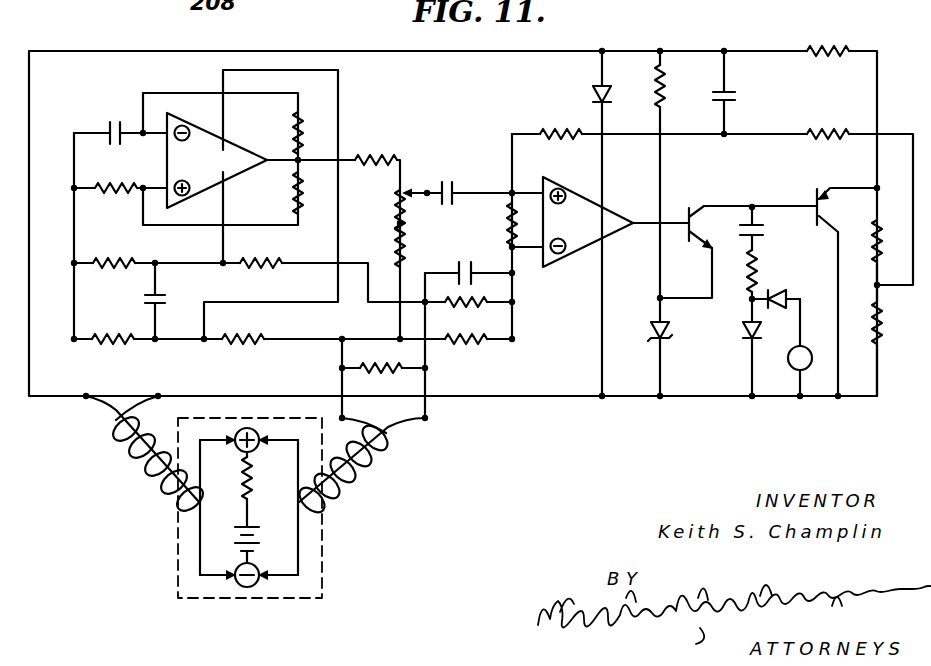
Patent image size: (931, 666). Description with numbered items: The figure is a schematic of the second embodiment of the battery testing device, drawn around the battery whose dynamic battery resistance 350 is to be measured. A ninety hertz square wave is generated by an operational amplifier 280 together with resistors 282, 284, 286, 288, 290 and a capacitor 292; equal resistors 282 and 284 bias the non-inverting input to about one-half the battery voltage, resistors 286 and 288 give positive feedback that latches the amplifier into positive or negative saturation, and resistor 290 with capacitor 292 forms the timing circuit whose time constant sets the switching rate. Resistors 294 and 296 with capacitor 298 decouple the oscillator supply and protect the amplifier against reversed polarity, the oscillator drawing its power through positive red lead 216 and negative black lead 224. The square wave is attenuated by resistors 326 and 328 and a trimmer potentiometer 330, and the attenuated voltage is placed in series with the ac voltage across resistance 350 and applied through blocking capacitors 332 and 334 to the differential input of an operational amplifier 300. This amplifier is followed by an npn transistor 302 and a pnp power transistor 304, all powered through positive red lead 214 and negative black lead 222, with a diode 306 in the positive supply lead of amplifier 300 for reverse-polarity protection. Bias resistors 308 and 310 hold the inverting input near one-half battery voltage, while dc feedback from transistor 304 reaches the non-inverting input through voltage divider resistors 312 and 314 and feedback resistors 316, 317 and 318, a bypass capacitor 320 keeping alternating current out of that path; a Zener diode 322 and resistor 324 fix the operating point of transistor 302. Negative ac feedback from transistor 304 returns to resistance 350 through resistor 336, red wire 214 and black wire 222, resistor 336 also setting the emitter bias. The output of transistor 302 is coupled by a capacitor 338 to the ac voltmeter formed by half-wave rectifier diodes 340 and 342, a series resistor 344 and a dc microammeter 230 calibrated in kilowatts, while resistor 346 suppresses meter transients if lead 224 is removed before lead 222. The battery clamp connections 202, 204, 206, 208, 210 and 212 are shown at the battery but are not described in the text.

The positive battery clamp 202 is at (244, 428).
The current lead to positive clamp 204 is at (230, 428).
The sense lead to positive clamp 206 is at (267, 440).
The negative battery clamp 208 is at (242, 588).
The current lead to negative clamp 210 is at (228, 584).
The sense lead to negative clamp 212 is at (261, 587).
The positive red lead 214 is at (113, 411).
The positive red lead 216 is at (360, 428).
The negative black lead 222 is at (106, 441).
The negative black lead 224 is at (405, 423).
The dc microammeter 230 is at (814, 380).
The operational amplifier 280 is at (258, 173).
The resistor 282 is at (125, 343).
The resistor 284 is at (112, 266).
The resistor 286 is at (111, 192).
The resistor 288 is at (303, 193).
The resistor 290 is at (304, 136).
The capacitor 292 is at (111, 118).
The resistor 294 is at (264, 260).
The resistor 296 is at (255, 337).
The capacitor 298 is at (145, 306).
The operational amplifier 300 is at (622, 228).
The npn transistor 302 is at (705, 208).
The pnp power transistor 304 is at (814, 196).
The diode 306 is at (596, 90).
The bias resistor 308 is at (477, 341).
The bias resistor 310 is at (478, 305).
The voltage divider resistor 312 is at (879, 218).
The voltage divider resistor 314 is at (879, 336).
The feedback resistor 316 is at (815, 134).
The feedback resistor 317 is at (549, 131).
The feedback resistor 318 is at (507, 215).
The bypass capacitor 320 is at (735, 98).
The Zener diode 322 is at (652, 331).
The resistor 324 is at (662, 102).
The resistor 326 is at (376, 158).
The resistor 328 is at (414, 256).
The trimmer potentiometer 330 is at (404, 185).
The blocking capacitor 332 is at (442, 181).
The blocking capacitor 334 is at (474, 275).
The resistor 336 is at (828, 50).
The capacitor 338 is at (764, 227).
The diode 340 is at (746, 331).
The diode 342 is at (786, 298).
The series resistor 344 is at (761, 259).
The resistor 346 is at (379, 369).
The dynamic battery resistance 350 is at (254, 481).